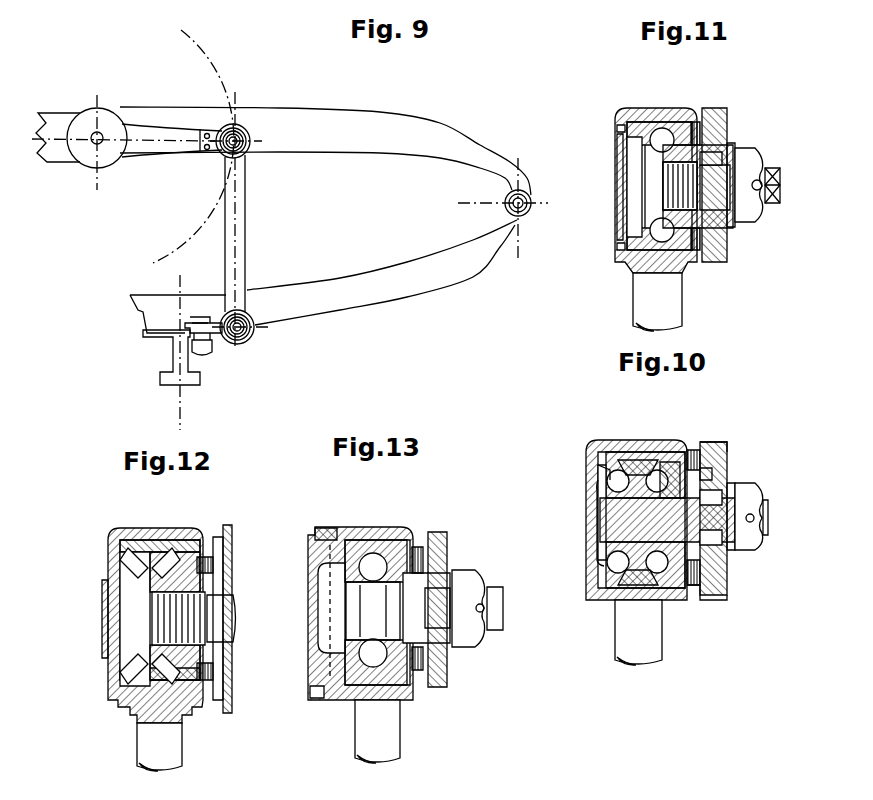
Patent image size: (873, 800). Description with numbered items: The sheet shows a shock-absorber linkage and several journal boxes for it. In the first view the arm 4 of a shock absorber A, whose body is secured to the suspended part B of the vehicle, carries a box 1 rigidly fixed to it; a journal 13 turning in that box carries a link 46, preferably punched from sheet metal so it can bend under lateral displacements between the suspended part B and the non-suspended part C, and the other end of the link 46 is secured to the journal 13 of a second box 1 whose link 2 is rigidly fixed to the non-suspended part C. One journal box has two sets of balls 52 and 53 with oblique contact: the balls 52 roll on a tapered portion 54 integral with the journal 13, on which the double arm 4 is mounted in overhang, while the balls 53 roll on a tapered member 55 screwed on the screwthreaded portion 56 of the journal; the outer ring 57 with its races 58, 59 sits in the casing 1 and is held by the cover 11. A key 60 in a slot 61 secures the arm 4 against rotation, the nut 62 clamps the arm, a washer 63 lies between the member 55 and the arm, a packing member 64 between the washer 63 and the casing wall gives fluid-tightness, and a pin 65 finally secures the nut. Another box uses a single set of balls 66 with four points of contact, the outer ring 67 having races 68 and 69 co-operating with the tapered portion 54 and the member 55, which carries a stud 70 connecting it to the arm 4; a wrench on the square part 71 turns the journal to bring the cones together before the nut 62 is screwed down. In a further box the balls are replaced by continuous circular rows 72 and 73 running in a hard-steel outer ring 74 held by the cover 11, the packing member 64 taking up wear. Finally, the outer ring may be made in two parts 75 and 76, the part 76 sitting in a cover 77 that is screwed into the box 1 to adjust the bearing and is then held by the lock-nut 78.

In FIG. 9, the shock absorber A is at (93, 120).
In FIG. 9, the suspended part B is at (380, 127).
In FIG. 9, the non-suspended part C is at (180, 373).
In FIG. 9, the box 1 is at (228, 125).
In FIG. 11, the box 1 is at (658, 112).
In FIG. 10, the box 1 is at (682, 450).
In FIG. 12, the box 1 is at (165, 533).
In FIG. 13, the box 1 is at (368, 533).
In FIG. 9, the link 2 is at (187, 322).
In FIG. 9, the arm 4 is at (160, 135).
In FIG. 11, the arm 4 is at (723, 247).
In FIG. 10, the arm 4 is at (720, 580).
In FIG. 13, the arm 4 is at (450, 663).
In FIG. 10, the cover 11 is at (590, 557).
In FIG. 12, the cover 11 is at (108, 593).
In FIG. 9, the journal 13 is at (242, 138).
In FIG. 11, the journal 13 is at (710, 193).
In FIG. 10, the journal 13 is at (628, 525).
In FIG. 13, the journal 13 is at (445, 553).
In FIG. 9, the link 46 is at (238, 226).
In FIG. 10, the balls 52 is at (598, 462).
In FIG. 10, the balls 53 is at (717, 442).
In FIG. 11, the tapered portion 54 is at (657, 158).
In FIG. 10, the tapered portion 54 is at (600, 503).
In FIG. 11, the tapered member 55 is at (727, 130).
In FIG. 10, the tapered member 55 is at (713, 482).
In FIG. 10, the screwthreaded portion 56 is at (723, 468).
In FIG. 10, the outer ring 57 is at (638, 470).
In FIG. 10, the roller race 58 is at (612, 453).
In FIG. 10, the roller race 59 is at (663, 450).
In FIG. 10, the key 60 is at (754, 518).
In FIG. 10, the slot 61 is at (713, 497).
In FIG. 11, the nut 62 is at (753, 205).
In FIG. 10, the nut 62 is at (747, 540).
In FIG. 13, the nut 62 is at (477, 627).
In FIG. 10, the washer 63 is at (727, 593).
In FIG. 10, the packing member 64 is at (697, 597).
In FIG. 12, the packing member 64 is at (217, 560).
In FIG. 13, the packing member 64 is at (417, 608).
In FIG. 10, the pin 65 is at (765, 518).
In FIG. 11, the balls 66 is at (618, 128).
In FIG. 11, the outer ring 67 is at (675, 130).
In FIG. 11, the ball race 68 is at (630, 110).
In FIG. 11, the ball race 69 is at (696, 120).
In FIG. 11, the stud 70 is at (717, 153).
In FIG. 11, the square part 71 is at (780, 197).
In FIG. 12, the continuous circular row 72 is at (183, 547).
In FIG. 12, the continuous circular row 73 is at (115, 532).
In FIG. 12, the outer ring 74 is at (147, 550).
In FIG. 13, the outer ring part 75 is at (405, 527).
In FIG. 13, the outer ring part 76 is at (333, 532).
In FIG. 13, the cover 77 is at (312, 603).
In FIG. 13, the lock-nut 78 is at (330, 693).